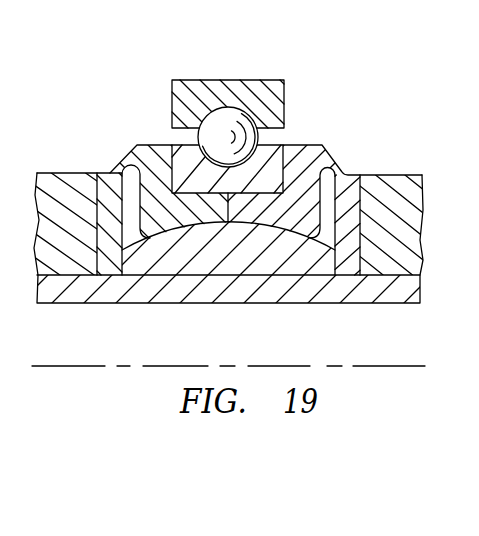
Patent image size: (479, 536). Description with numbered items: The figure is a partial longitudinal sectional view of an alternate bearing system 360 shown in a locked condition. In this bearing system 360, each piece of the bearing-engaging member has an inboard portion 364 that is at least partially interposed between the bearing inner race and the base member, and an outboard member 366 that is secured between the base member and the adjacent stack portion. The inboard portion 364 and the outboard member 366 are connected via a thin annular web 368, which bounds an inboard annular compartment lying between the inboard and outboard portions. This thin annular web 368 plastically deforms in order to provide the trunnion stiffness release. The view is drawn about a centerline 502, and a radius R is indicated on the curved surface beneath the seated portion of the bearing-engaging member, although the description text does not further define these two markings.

The alternate bearing system 360 is at (357, 89).
The inboard portion 364 is at (290, 167).
The outboard member 366 is at (362, 183).
The thin annular web 368 is at (369, 144).
The centerline axis 502 is at (328, 366).
The radius of seat surface R is at (143, 251).